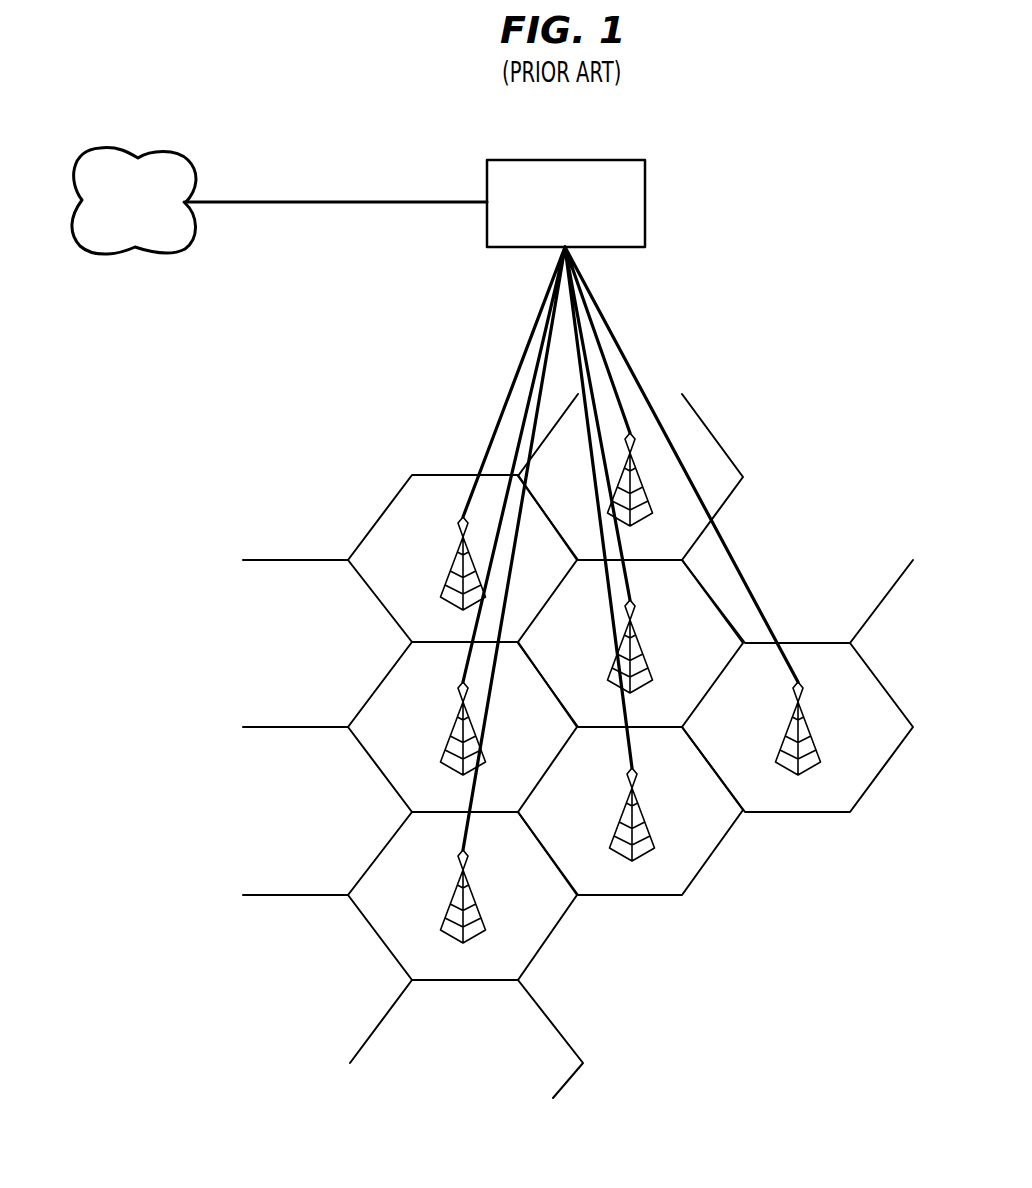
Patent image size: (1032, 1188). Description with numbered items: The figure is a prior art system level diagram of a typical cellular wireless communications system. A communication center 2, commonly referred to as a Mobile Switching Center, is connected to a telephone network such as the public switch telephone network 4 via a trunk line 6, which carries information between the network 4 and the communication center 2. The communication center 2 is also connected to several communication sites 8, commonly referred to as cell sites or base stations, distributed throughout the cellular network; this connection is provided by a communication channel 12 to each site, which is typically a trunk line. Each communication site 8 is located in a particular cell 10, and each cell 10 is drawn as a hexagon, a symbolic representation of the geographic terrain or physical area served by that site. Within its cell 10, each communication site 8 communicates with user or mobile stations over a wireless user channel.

The communication center 2 is at (542, 160).
The public switch telephone network 4 is at (90, 254).
The trunk line 6 is at (256, 201).
The communication site 8 is at (443, 597).
The cell 10 is at (378, 517).
The communication channel 12 is at (528, 392).